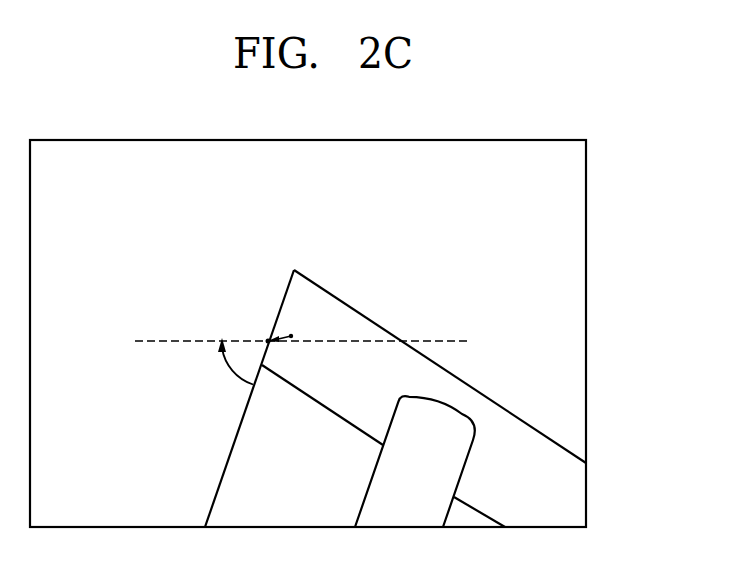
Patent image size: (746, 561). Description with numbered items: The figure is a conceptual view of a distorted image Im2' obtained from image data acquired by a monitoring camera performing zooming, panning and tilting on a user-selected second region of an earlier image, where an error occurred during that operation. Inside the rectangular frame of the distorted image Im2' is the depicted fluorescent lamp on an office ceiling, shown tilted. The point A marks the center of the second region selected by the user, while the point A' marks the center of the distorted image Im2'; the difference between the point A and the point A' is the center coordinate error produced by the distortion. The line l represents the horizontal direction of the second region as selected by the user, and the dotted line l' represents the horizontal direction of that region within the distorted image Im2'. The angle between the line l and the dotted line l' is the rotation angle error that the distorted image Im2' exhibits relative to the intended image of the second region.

The distorted image Im2' is at (378, 310).
The horizontal direction of the second region l is at (249, 398).
The dotted line l' is at (301, 331).
The center of the second region A is at (264, 331).
The center of the distorted image A' is at (285, 349).